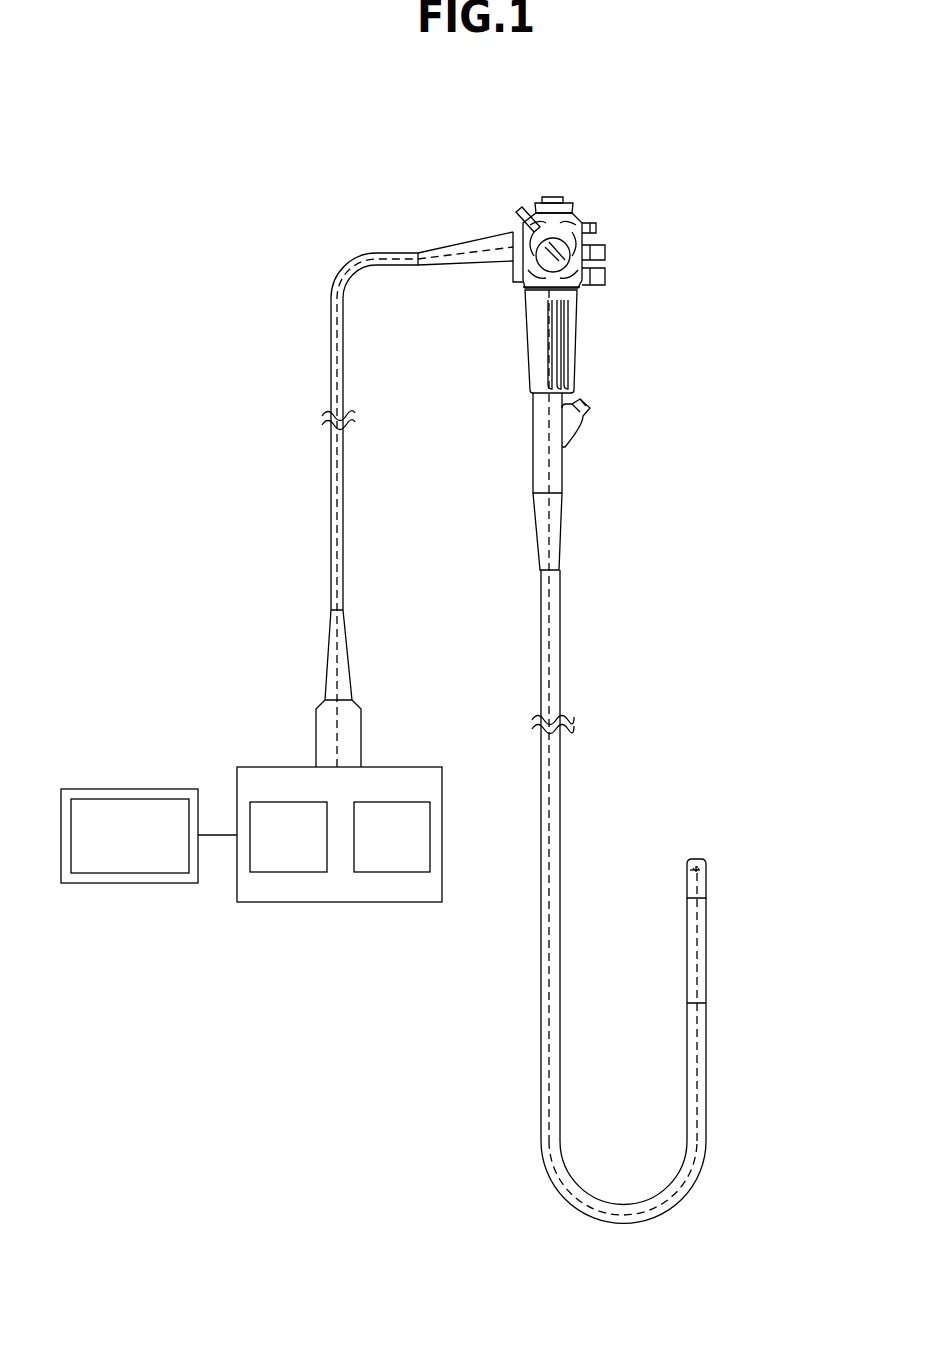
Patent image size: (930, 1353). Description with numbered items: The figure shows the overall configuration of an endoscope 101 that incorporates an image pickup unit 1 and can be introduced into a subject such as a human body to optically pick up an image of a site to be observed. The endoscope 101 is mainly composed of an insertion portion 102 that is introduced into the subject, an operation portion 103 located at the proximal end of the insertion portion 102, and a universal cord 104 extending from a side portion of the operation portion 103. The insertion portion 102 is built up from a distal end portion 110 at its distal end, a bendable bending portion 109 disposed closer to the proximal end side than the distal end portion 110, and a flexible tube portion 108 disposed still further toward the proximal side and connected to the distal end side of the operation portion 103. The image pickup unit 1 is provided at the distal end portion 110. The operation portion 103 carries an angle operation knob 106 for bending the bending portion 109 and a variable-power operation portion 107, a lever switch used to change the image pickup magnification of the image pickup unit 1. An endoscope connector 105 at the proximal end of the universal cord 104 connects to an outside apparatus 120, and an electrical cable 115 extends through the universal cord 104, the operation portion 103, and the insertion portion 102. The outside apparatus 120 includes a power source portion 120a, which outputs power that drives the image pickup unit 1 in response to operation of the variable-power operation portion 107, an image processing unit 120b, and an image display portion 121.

The image pickup unit 1 is at (710, 858).
The endoscope 101 is at (238, 211).
The insertion portion 102 is at (669, 726).
The operation portion 103 is at (470, 345).
The universal cord 104 is at (364, 264).
The endoscope connector 105 is at (315, 750).
The angle operation knob 106 is at (530, 262).
The variable-power operation portion 107 is at (518, 214).
The flexible tube portion 108 is at (647, 1223).
The bending portion 109 is at (705, 955).
The distal end portion 110 is at (705, 880).
The electrical cable 115 is at (698, 1054).
The outside apparatus 120 is at (337, 902).
The power source portion 120a is at (405, 872).
The image processing unit 120b is at (267, 872).
The image display portion 121 is at (127, 883).